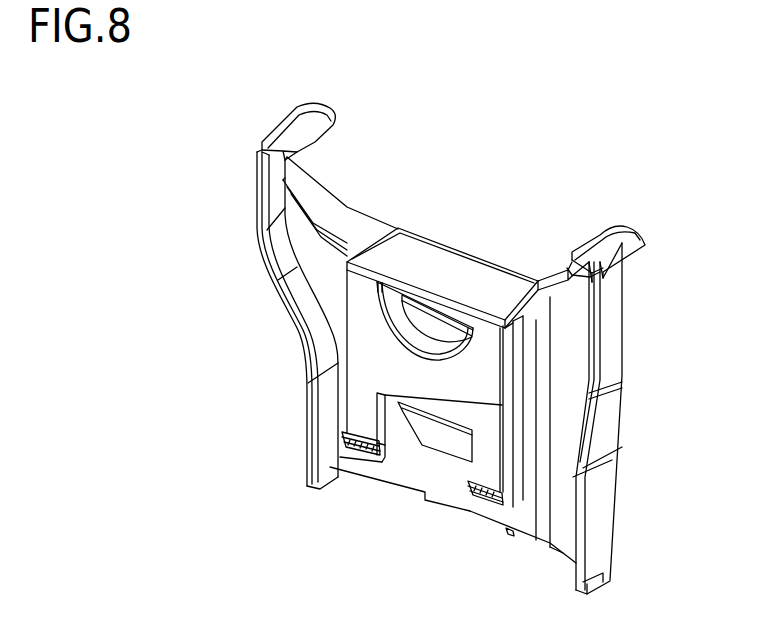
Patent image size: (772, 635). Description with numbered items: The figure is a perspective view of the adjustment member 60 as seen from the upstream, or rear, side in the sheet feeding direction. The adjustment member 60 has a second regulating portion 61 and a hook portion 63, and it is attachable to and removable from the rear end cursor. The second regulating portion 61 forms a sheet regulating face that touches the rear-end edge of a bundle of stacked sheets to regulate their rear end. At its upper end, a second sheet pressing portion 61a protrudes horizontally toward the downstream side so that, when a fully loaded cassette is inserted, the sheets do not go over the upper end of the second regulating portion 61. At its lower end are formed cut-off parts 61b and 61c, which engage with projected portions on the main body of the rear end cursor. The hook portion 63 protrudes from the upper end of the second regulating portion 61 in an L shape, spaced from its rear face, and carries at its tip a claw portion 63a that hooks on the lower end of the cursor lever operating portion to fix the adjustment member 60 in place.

The adjustment member 60 is at (550, 185).
The second regulating portion 61 is at (625, 353).
The second sheet pressing portion 61a is at (314, 114).
The cut-off part 61b is at (527, 537).
The cut-off part 61c is at (397, 484).
The hook portion 63 is at (412, 382).
The claw portion 63a is at (360, 447).